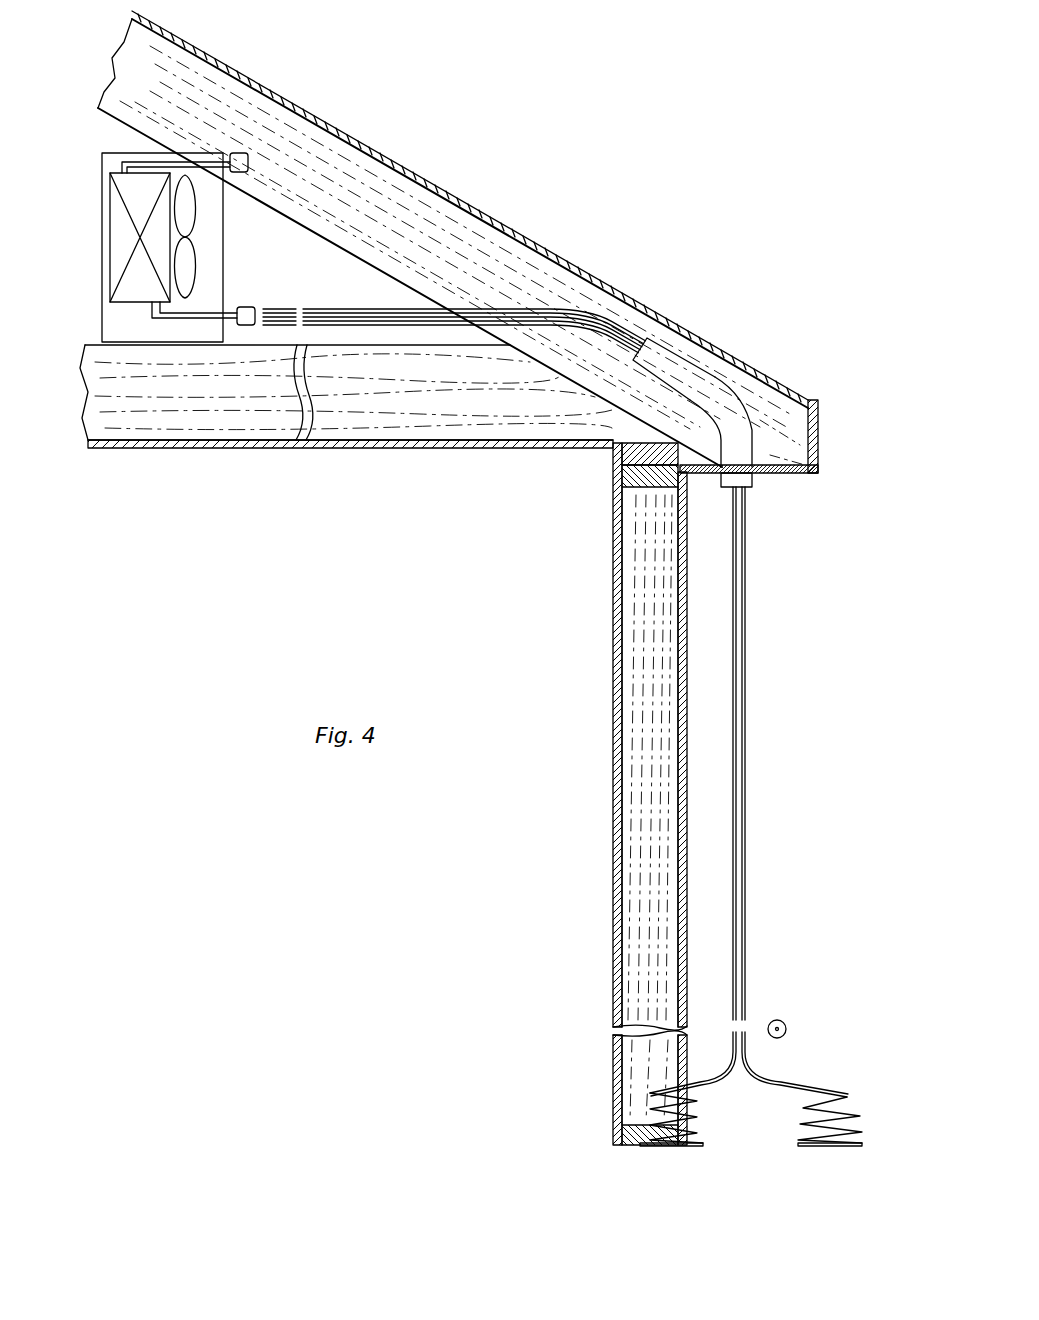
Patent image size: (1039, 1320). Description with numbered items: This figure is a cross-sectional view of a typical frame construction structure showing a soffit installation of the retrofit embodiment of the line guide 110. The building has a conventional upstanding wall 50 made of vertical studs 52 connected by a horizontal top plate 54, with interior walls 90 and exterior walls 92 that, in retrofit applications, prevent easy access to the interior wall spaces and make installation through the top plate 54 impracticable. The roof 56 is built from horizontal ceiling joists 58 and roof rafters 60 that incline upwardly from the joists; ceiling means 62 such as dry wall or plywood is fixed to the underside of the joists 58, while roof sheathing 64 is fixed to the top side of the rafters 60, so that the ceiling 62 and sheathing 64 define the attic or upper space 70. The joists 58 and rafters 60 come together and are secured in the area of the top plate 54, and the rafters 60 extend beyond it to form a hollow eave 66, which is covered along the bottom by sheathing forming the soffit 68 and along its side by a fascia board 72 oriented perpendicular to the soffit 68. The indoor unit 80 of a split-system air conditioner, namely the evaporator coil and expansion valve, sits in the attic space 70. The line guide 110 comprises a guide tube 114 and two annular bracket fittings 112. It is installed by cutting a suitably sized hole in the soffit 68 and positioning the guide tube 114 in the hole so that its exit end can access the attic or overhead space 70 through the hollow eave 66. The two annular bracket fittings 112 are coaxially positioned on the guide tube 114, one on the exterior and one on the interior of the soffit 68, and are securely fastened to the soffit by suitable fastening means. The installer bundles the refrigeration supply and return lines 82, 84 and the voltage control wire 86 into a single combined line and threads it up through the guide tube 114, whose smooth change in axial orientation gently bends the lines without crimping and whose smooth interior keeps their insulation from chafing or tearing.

The upstanding wall 50 is at (689, 180).
The vertical stud 52 is at (650, 600).
The horizontal top plate 54 is at (630, 420).
The roof 56 is at (540, 246).
The ceiling joist 58 is at (487, 388).
The roof rafter 60 is at (405, 233).
The ceiling means 62 is at (438, 449).
The roof sheathing 64 is at (335, 137).
The eave 66 is at (754, 444).
The soffit 68 is at (798, 473).
The attic or upper space 70 is at (298, 278).
The fascia board 72 is at (818, 427).
The indoor unit 80 is at (102, 205).
The supply line 82 is at (648, 1097).
The return line 84 is at (848, 1097).
The voltage control wire 86 is at (787, 1035).
The interior wall 90 is at (617, 760).
The exterior wall 92 is at (682, 815).
The line guide 110 is at (544, 397).
The annular bracket fitting 112 is at (779, 443).
The guide tube 114 is at (716, 367).